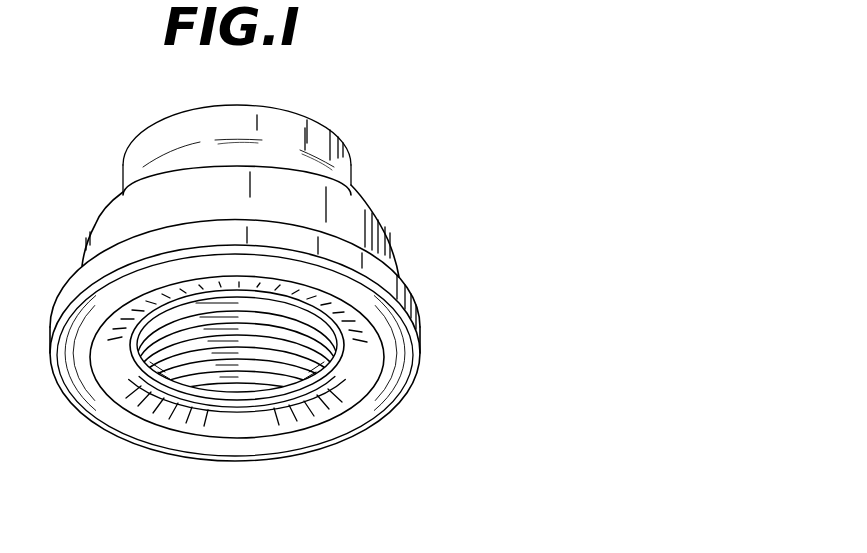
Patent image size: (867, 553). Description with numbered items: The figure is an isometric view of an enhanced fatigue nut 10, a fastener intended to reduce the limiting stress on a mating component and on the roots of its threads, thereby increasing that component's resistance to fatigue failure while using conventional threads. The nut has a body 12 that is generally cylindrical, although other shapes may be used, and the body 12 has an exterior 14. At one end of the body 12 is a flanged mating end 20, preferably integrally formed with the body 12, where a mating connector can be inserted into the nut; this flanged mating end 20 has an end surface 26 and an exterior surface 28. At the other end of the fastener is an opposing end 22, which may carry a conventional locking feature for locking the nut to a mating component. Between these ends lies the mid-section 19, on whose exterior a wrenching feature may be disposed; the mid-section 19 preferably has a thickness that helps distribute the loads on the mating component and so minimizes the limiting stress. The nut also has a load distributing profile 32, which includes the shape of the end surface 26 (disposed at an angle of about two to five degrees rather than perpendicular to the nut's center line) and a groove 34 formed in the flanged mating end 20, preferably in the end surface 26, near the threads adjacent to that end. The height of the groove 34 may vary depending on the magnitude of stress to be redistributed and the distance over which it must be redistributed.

The enhanced fatigue nut 10 is at (486, 96).
The body 12 is at (354, 175).
The exterior 14 is at (147, 158).
The mid-section 19 is at (120, 221).
The flanged mating end 20 is at (402, 288).
The opposing end 22 is at (313, 122).
The end surface 26 is at (393, 398).
The exterior surface 28 is at (418, 317).
The load distributing profile 32 is at (350, 455).
The groove 34 is at (127, 392).